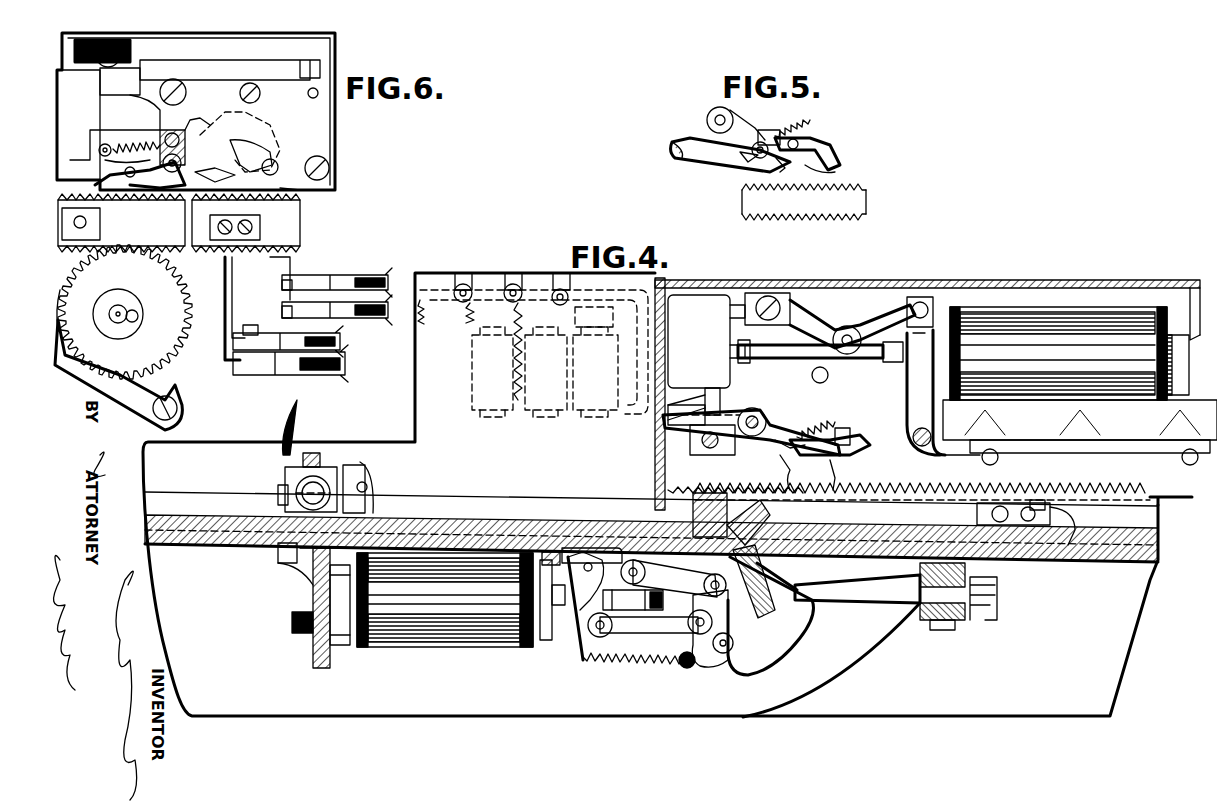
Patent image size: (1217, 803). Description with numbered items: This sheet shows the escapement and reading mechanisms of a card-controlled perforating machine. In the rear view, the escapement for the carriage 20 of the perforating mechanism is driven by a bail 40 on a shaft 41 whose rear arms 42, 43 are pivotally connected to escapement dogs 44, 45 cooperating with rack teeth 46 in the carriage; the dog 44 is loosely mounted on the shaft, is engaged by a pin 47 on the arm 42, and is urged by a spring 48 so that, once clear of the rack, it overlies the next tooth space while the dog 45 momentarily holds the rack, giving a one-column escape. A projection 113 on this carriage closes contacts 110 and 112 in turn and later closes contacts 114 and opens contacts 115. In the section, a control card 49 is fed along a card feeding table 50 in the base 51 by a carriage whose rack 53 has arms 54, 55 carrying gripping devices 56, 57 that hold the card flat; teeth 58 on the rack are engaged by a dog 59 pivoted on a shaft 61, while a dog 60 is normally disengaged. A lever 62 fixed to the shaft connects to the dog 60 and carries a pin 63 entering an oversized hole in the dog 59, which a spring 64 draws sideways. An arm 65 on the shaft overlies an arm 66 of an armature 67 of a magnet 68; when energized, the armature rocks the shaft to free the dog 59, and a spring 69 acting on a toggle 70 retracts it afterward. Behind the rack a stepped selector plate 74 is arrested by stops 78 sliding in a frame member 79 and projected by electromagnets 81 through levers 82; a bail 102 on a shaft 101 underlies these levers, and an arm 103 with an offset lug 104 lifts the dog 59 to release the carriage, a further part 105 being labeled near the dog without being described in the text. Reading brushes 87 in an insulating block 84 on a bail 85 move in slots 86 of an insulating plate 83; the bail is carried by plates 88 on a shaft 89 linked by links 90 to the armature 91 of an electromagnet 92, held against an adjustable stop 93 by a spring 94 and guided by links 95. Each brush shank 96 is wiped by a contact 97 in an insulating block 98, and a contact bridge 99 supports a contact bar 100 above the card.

In FIG. 6, the carriage 20 is at (285, 228).
In FIG. 6, the bail 40 is at (242, 115).
In FIG. 6, the shaft 41 is at (195, 150).
In FIG. 6, the arm 42 is at (140, 183).
In FIG. 6, the arm 43 is at (225, 182).
In FIG. 6, the escapement dog 44 is at (93, 224).
In FIG. 6, the escapement dog 45 is at (265, 150).
In FIG. 6, the rack teeth 46 is at (300, 200).
In FIG. 6, the pin 47 is at (102, 158).
In FIG. 6, the spring 48 is at (130, 147).
In FIG. 4, the card 49 is at (460, 515).
In FIG. 4, the card feeding table 50 is at (180, 505).
In FIG. 4, the base 51 is at (210, 545).
In FIG. 5, the rack 53 is at (866, 203).
In FIG. 4, the rack 53 is at (1128, 505).
In FIG. 4, the arm 54 is at (1068, 545).
In FIG. 4, the arm 55 is at (285, 482).
In FIG. 4, the gripping device 56 is at (370, 462).
In FIG. 4, the gripping device 57 is at (975, 512).
In FIG. 5, the teeth 58 is at (862, 186).
In FIG. 4, the teeth 58 is at (1110, 480).
In FIG. 5, the dog 59 is at (830, 142).
In FIG. 4, the dog 59 is at (855, 460).
In FIG. 5, the dog 60 is at (705, 158).
In FIG. 4, the dog 60 is at (770, 465).
In FIG. 5, the shaft 61 is at (740, 160).
In FIG. 4, the shaft 61 is at (790, 497).
In FIG. 5, the lever 62 is at (790, 160).
In FIG. 5, the pin 63 is at (790, 140).
In FIG. 5, the spring 64 is at (785, 130).
In FIG. 4, the spring 64 is at (828, 423).
In FIG. 4, the arm 65 is at (850, 435).
In FIG. 4, the arm 66 is at (935, 462).
In FIG. 4, the armature 67 is at (920, 355).
In FIG. 4, the magnet 68 is at (1065, 325).
In FIG. 4, the spring 69 is at (812, 374).
In FIG. 4, the toggle 70 is at (880, 295).
In FIG. 4, the stepped selector plate 74 is at (1178, 500).
In FIG. 4, the movable stop 78 is at (725, 392).
In FIG. 4, the frame member 79 is at (690, 460).
In FIG. 4, the electromagnet 81 is at (575, 392).
In FIG. 4, the lever 82 is at (665, 330).
In FIG. 4, the insulating plate 83 is at (600, 520).
In FIG. 4, the insulating block 84 is at (810, 615).
In FIG. 4, the bail 85 is at (778, 648).
In FIG. 4, the slot 86 is at (718, 560).
In FIG. 4, the reading brush 87 is at (690, 510).
In FIG. 4, the plate 88 is at (706, 665).
In FIG. 4, the shaft 89 is at (680, 665).
In FIG. 4, the link 90 is at (580, 665).
In FIG. 4, the armature 91 is at (540, 598).
In FIG. 4, the electromagnet 92 is at (393, 630).
In FIG. 4, the adjustable stop 93 is at (535, 585).
In FIG. 4, the spring 94 is at (618, 630).
In FIG. 4, the link 95 is at (668, 608).
In FIG. 4, the shank 96 is at (792, 568).
In FIG. 4, the wiping contact 97 is at (915, 595).
In FIG. 4, the insulating block 98 is at (940, 635).
In FIG. 4, the contact bridge 99 is at (665, 493).
In FIG. 4, the contact bar 100 is at (730, 510).
In FIG. 5, the shaft 101 is at (708, 116).
In FIG. 4, the shaft 101 is at (765, 398).
In FIG. 4, the bail 102 is at (668, 432).
In FIG. 5, the arm 103 is at (745, 130).
In FIG. 4, the arm 103 is at (800, 440).
In FIG. 5, the offset lug 104 is at (838, 172).
In FIG. 4, the pawl 105 is at (833, 495).
In FIG. 6, the contacts 110 is at (237, 365).
In FIG. 6, the contacts 112 is at (250, 325).
In FIG. 6, the projection 113 is at (215, 248).
In FIG. 6, the contacts 114 is at (290, 275).
In FIG. 6, the contacts 115 is at (300, 310).